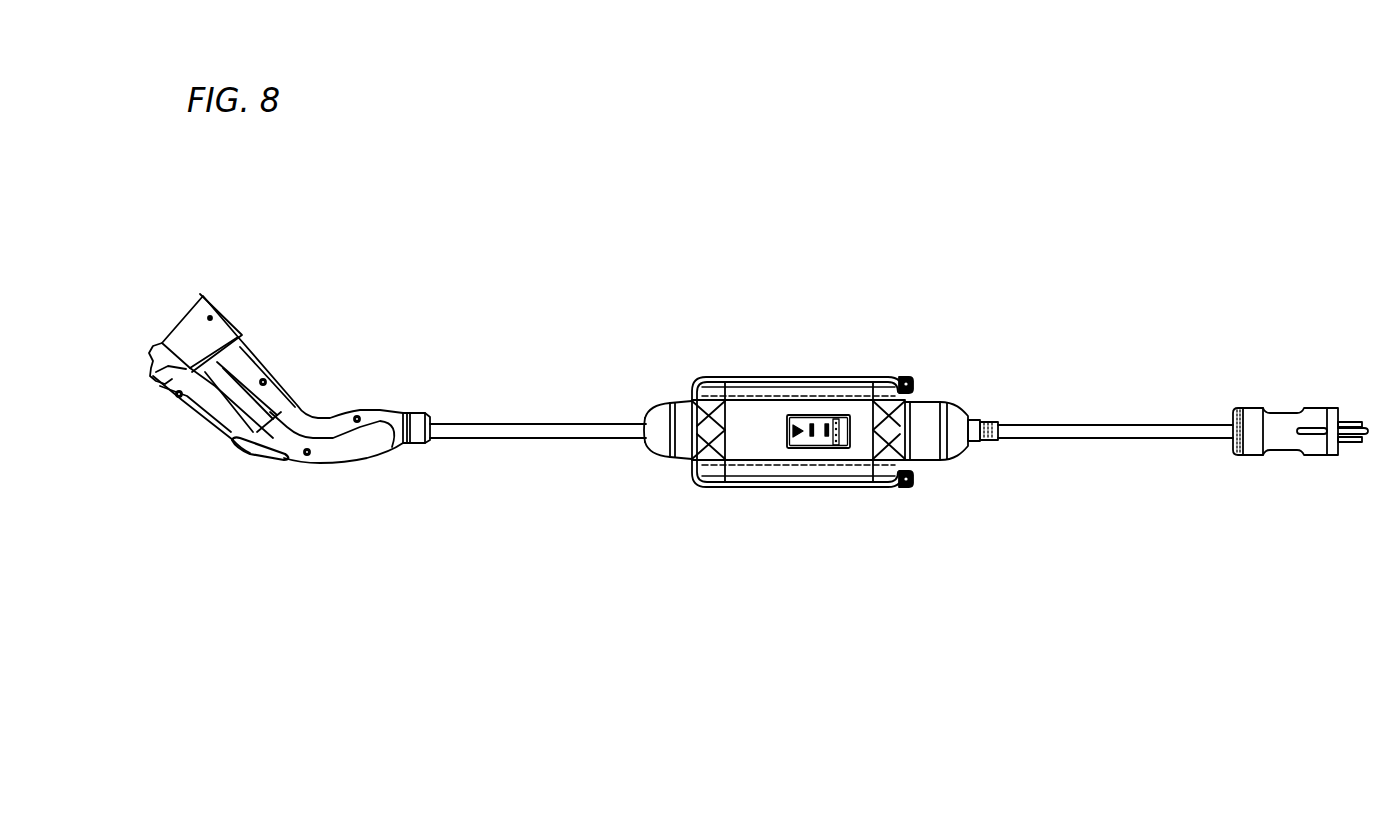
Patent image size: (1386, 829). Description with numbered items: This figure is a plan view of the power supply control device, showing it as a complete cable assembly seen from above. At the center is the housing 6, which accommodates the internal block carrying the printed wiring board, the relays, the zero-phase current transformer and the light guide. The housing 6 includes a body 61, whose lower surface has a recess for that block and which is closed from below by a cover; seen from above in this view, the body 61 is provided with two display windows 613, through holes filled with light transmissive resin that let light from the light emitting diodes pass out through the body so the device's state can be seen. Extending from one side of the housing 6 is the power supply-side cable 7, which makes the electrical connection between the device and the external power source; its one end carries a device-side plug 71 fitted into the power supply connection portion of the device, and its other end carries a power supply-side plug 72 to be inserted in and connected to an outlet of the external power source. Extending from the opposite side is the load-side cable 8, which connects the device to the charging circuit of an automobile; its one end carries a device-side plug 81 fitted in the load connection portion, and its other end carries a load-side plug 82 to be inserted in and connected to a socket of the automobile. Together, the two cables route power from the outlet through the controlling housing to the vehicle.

The housing 6 is at (700, 380).
The body 61 is at (763, 390).
The display windows 613 is at (813, 428).
The power supply-side cable 7 is at (1115, 436).
The device-side plug 71 is at (955, 447).
The power supply-side plug 72 is at (1342, 408).
The load-side cable 8 is at (528, 433).
The device-side plug 81 is at (660, 447).
The load-side plug 82 is at (205, 300).